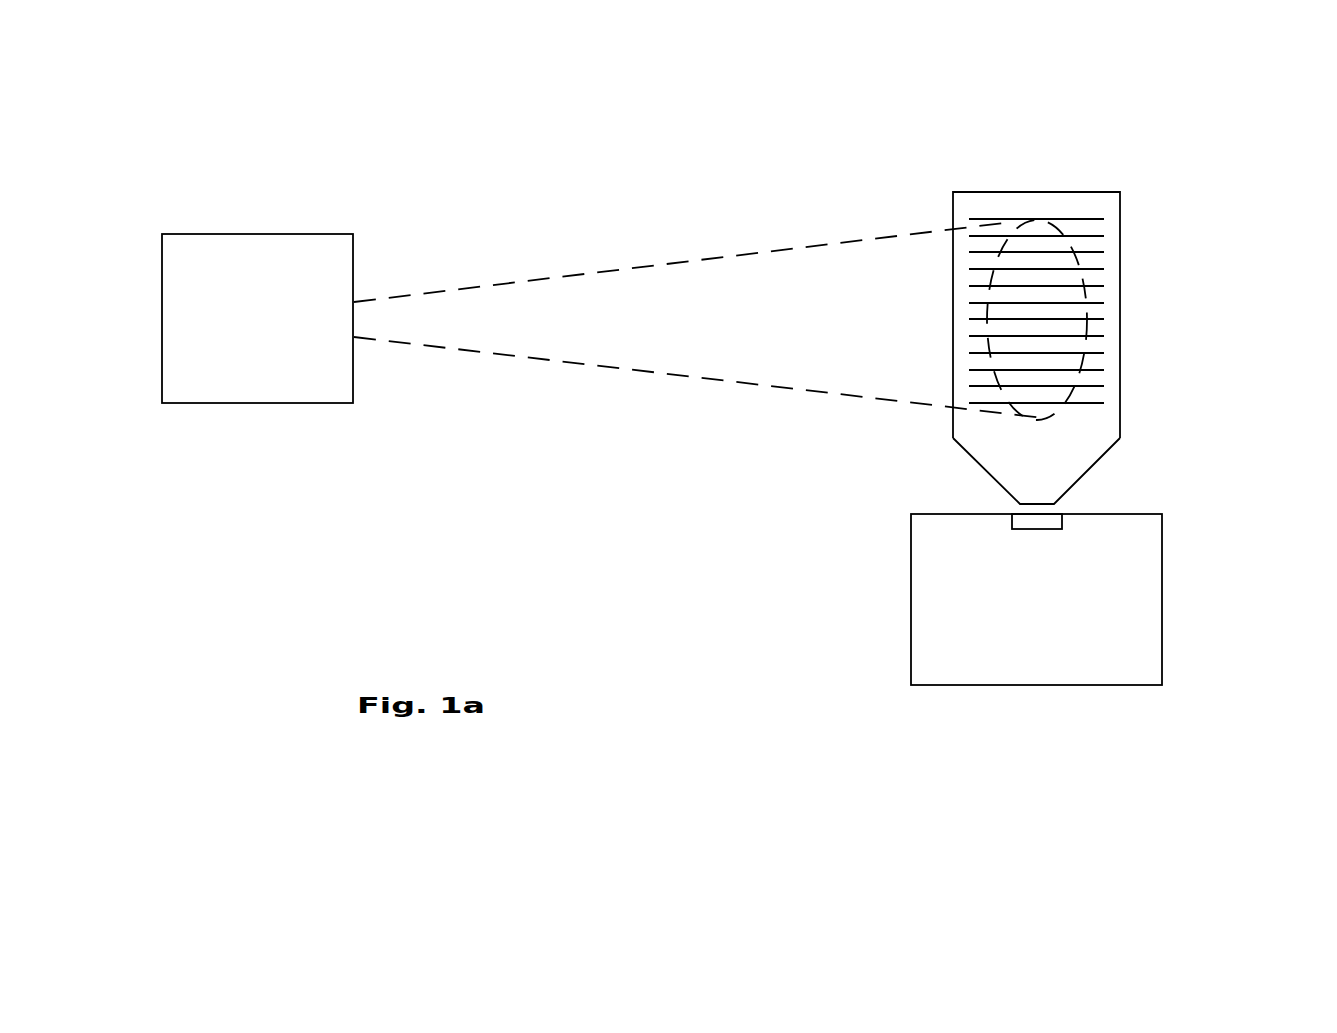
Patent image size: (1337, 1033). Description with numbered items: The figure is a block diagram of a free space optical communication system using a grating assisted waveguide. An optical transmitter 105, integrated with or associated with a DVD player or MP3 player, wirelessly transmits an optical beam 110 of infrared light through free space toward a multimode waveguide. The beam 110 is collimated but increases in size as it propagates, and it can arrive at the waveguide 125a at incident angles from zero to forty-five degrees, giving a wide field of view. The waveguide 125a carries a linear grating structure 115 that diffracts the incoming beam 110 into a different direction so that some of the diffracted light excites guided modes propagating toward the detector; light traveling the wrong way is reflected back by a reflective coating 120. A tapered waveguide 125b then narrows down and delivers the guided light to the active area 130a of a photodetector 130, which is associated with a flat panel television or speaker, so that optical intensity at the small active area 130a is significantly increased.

The optical transmitter 105 is at (257, 318).
The optical beam 110 is at (645, 262).
The linear grating structure 115 is at (1073, 219).
The reflective coating 120 is at (980, 198).
The waveguide 125a is at (1120, 320).
The tapered waveguide 125b is at (1053, 465).
The photodetector 130 is at (1036, 599).
The active area 130a is at (1037, 523).